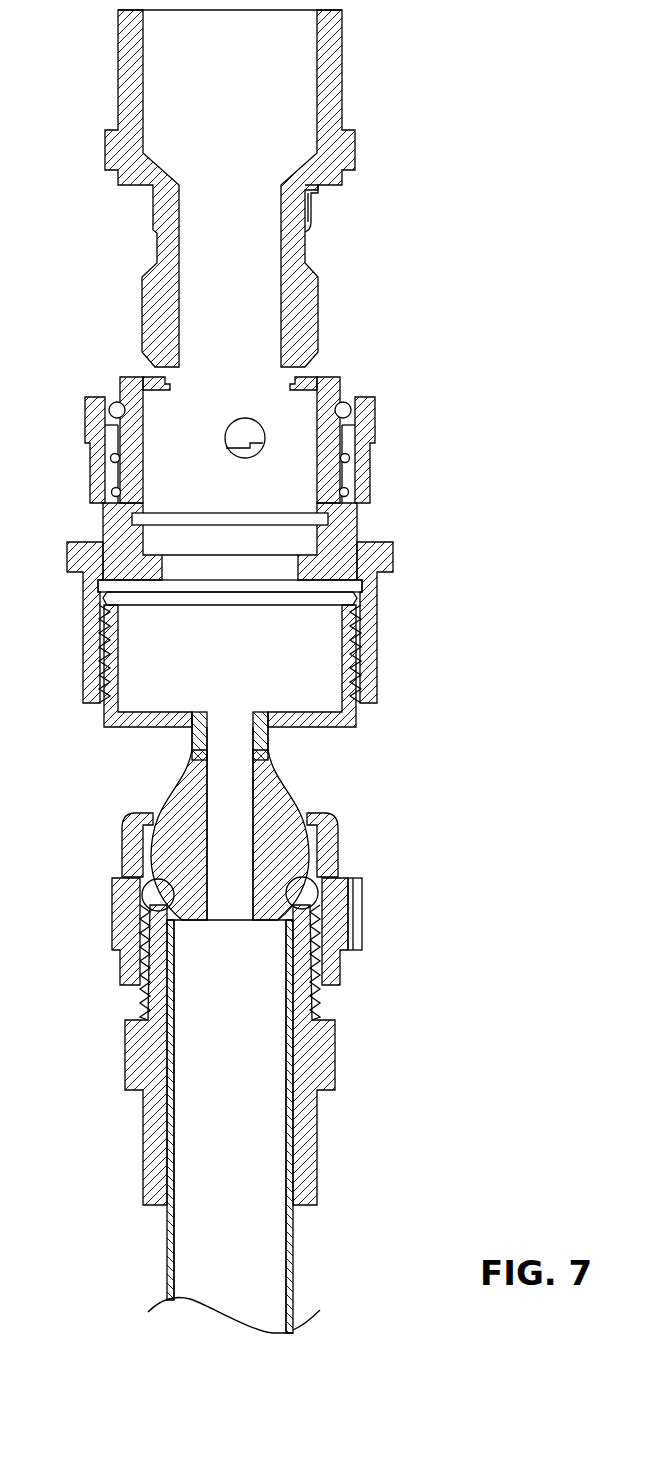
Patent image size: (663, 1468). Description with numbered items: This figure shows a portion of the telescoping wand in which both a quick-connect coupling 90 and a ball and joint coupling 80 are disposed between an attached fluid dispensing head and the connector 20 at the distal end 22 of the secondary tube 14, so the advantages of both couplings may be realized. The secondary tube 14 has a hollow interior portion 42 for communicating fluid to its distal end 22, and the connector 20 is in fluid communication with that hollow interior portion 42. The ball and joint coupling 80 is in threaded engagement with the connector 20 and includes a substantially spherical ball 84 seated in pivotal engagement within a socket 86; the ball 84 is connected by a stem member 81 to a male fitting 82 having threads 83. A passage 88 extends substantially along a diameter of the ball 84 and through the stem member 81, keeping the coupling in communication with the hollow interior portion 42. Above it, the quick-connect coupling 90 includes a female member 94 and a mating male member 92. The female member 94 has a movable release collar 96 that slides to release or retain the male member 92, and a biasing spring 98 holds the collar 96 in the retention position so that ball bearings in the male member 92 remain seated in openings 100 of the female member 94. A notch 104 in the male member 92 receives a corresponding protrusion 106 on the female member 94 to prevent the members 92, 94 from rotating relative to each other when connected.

The secondary tube 14 is at (293, 1256).
The connector 20 is at (327, 1048).
The distal end 22 is at (290, 1145).
The hollow interior portion 42 is at (218, 1211).
The ball and joint coupling 80 is at (350, 728).
The stem member 81 is at (192, 748).
The male fitting 82 is at (355, 653).
The threads 83 is at (100, 643).
The ball 84 is at (285, 807).
The socket 86 is at (313, 865).
The passage 88 is at (216, 832).
The quick-connect coupling 90 is at (380, 349).
The male member 92 is at (338, 48).
The female member 94 is at (393, 557).
The release collar 96 is at (368, 413).
The biasing spring 98 is at (349, 490).
The openings 100 is at (240, 464).
The notch 104 is at (318, 192).
The protrusion 106 is at (143, 376).